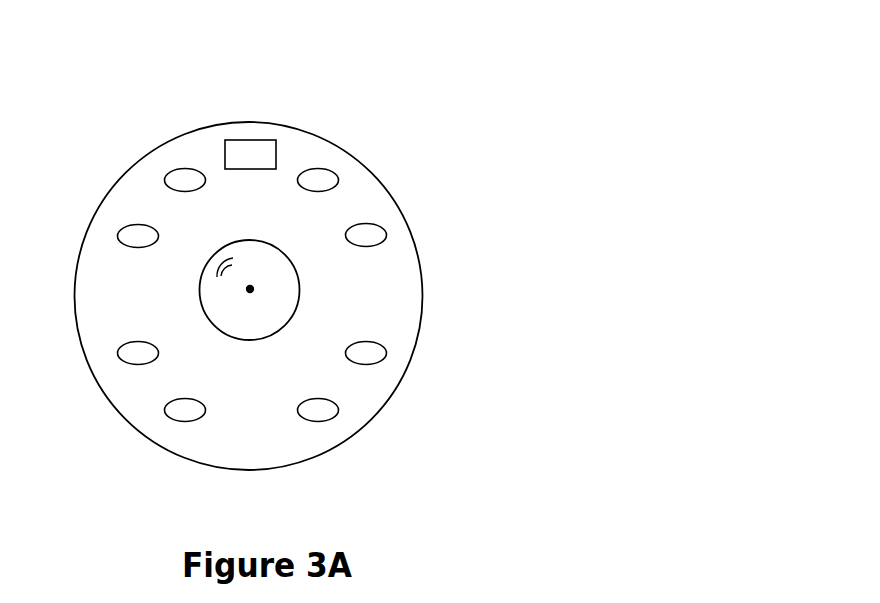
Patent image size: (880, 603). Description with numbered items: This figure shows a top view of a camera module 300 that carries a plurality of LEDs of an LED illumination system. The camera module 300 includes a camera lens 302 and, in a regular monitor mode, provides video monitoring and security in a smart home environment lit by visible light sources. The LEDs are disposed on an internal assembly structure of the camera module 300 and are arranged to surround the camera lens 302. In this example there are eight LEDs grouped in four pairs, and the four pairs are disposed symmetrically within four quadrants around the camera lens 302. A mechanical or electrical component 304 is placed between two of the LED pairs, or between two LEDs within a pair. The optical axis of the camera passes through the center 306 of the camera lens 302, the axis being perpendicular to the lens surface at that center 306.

The camera module 300 is at (421, 64).
The camera lens 302 is at (199, 300).
The mechanical or electrical component 304 is at (255, 140).
The center of the camera lens 306 is at (254, 289).